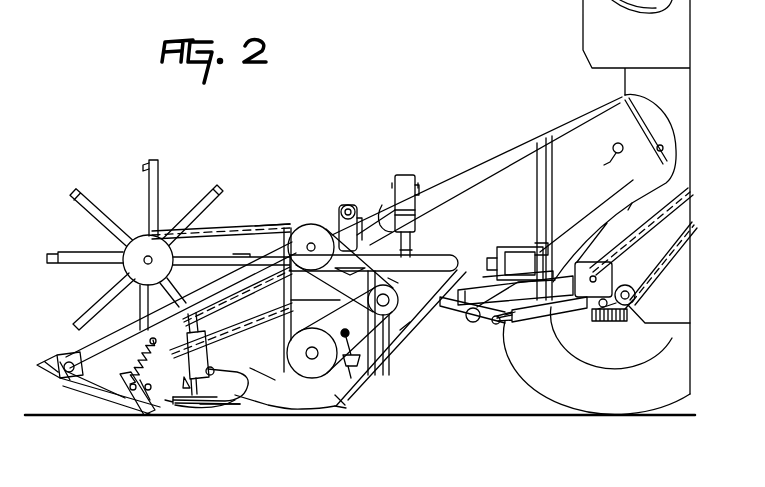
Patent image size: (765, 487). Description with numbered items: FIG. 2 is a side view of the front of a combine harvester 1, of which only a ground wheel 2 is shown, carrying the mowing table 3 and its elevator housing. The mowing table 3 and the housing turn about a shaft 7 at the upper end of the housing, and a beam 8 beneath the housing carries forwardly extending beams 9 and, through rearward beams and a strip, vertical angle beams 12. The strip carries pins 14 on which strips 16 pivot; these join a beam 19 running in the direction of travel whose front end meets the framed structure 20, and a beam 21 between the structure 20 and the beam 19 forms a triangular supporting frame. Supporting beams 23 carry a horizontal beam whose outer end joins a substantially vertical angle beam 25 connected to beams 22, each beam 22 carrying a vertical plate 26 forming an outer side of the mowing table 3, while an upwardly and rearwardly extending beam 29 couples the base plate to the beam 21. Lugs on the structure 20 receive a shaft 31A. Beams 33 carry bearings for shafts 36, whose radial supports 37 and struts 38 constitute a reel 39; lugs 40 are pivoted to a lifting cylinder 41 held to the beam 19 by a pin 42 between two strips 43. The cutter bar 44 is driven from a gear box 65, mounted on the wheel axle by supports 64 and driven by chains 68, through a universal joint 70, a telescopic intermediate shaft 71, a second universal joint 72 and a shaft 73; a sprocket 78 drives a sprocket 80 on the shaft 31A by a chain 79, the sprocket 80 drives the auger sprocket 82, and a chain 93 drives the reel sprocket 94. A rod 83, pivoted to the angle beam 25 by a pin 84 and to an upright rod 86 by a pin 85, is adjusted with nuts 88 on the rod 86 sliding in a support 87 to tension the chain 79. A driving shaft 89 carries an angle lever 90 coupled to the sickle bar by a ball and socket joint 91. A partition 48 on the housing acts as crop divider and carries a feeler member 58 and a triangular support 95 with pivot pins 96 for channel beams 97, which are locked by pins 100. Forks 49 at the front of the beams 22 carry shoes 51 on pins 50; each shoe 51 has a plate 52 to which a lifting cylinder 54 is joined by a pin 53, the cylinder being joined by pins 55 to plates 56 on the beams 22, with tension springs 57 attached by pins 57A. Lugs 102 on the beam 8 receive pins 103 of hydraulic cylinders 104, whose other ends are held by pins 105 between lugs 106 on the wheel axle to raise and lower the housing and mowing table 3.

The tractor body 1 is at (584, 42).
The ground wheels 2 is at (562, 382).
The mowing table 3 is at (338, 408).
The shaft 7 is at (611, 160).
The beam 8 is at (472, 326).
The beams 9 is at (460, 323).
The angle beams 12 is at (552, 165).
The pins 14 is at (542, 264).
The strips 16 is at (530, 256).
The beam 19 is at (506, 254).
The framed structure 20 is at (316, 268).
The beam 21 is at (452, 256).
The beams 22 is at (98, 343).
The supporting beams 23 is at (398, 281).
The angle beam 25 is at (210, 327).
The vertical plate 26 is at (296, 410).
The beam 29 is at (405, 331).
The shaft 31A is at (311, 225).
The beams 33 is at (255, 224).
The shafts 36 is at (145, 261).
The radial supports 37 is at (160, 194).
The struts 38 is at (143, 166).
The reels 39 is at (76, 253).
The lugs 40 is at (376, 222).
The lifting cylinder 41 is at (343, 206).
The pin 42 is at (349, 205).
The strips 43 is at (358, 213).
The cutter bar 44 is at (182, 408).
The partition 48 is at (500, 158).
The forks 49 is at (67, 361).
The pins 50 is at (55, 356).
The shoes 51 is at (210, 408).
The plate 52 is at (128, 405).
The pin 53 is at (150, 408).
The lifting cylinder 54 is at (140, 405).
The pins 55 is at (205, 336).
The plates 56 is at (150, 340).
The tension springs 57 is at (128, 383).
The pins 57A is at (70, 398).
The feeler member 58 is at (65, 380).
The supports 64 is at (662, 250).
The gear box 65 is at (600, 262).
The chains 68 is at (663, 263).
The universal joint 70 is at (555, 238).
The telescopic intermediate shaft 71 is at (494, 288).
The universal joint 72 is at (420, 303).
The shaft 73 is at (397, 284).
The sprocket 78 is at (368, 298).
The chain 79 is at (286, 316).
The sprocket 80 is at (298, 222).
The sprocket 82 is at (305, 378).
The rod 83 is at (273, 358).
The pin 84 is at (265, 373).
The pin 85 is at (356, 340).
The upright rod 86 is at (312, 353).
The support 87 is at (341, 375).
The nuts 88 is at (333, 397).
The driving shaft 89 is at (322, 318).
The angle lever 90 is at (212, 365).
The ball and socket joint 91 is at (190, 372).
The chain 93 is at (218, 226).
The sprocket 94 is at (139, 238).
The triangular support 95 is at (412, 250).
The pivot pins 96 is at (420, 180).
The channel beam 97 is at (408, 174).
The pins 100 is at (384, 205).
The lugs 102 is at (495, 325).
The pins 103 is at (505, 338).
The hydraulic cylinders 104 is at (545, 323).
The pins 105 is at (610, 322).
The lugs 106 is at (630, 315).